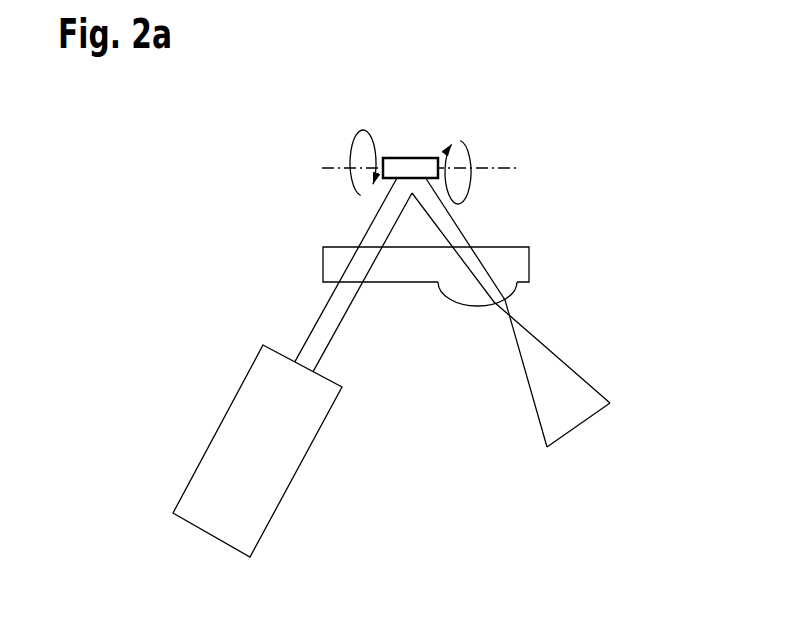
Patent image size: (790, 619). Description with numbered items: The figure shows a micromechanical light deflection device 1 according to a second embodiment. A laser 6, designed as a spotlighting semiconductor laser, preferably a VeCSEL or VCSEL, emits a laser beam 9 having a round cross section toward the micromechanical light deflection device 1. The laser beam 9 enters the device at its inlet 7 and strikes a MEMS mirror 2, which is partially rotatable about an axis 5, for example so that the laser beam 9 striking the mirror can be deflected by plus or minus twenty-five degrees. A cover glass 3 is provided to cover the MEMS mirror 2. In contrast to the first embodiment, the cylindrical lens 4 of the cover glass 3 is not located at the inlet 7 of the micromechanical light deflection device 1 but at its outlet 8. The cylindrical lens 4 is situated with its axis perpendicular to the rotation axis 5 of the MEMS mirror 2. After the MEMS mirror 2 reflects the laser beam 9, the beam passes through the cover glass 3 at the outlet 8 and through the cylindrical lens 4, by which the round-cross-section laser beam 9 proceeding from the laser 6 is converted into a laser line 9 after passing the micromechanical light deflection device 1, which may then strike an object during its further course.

The micromechanical light deflection device 1 is at (272, 165).
The MEMS mirror 2 is at (409, 158).
The cover glass 3 is at (530, 265).
The cylindrical lens 4 is at (513, 295).
The axis 5 is at (512, 166).
The laser 6 is at (202, 455).
The inlet 7 is at (318, 294).
The outlet 8 is at (465, 327).
The laser beam 9 is at (603, 435).